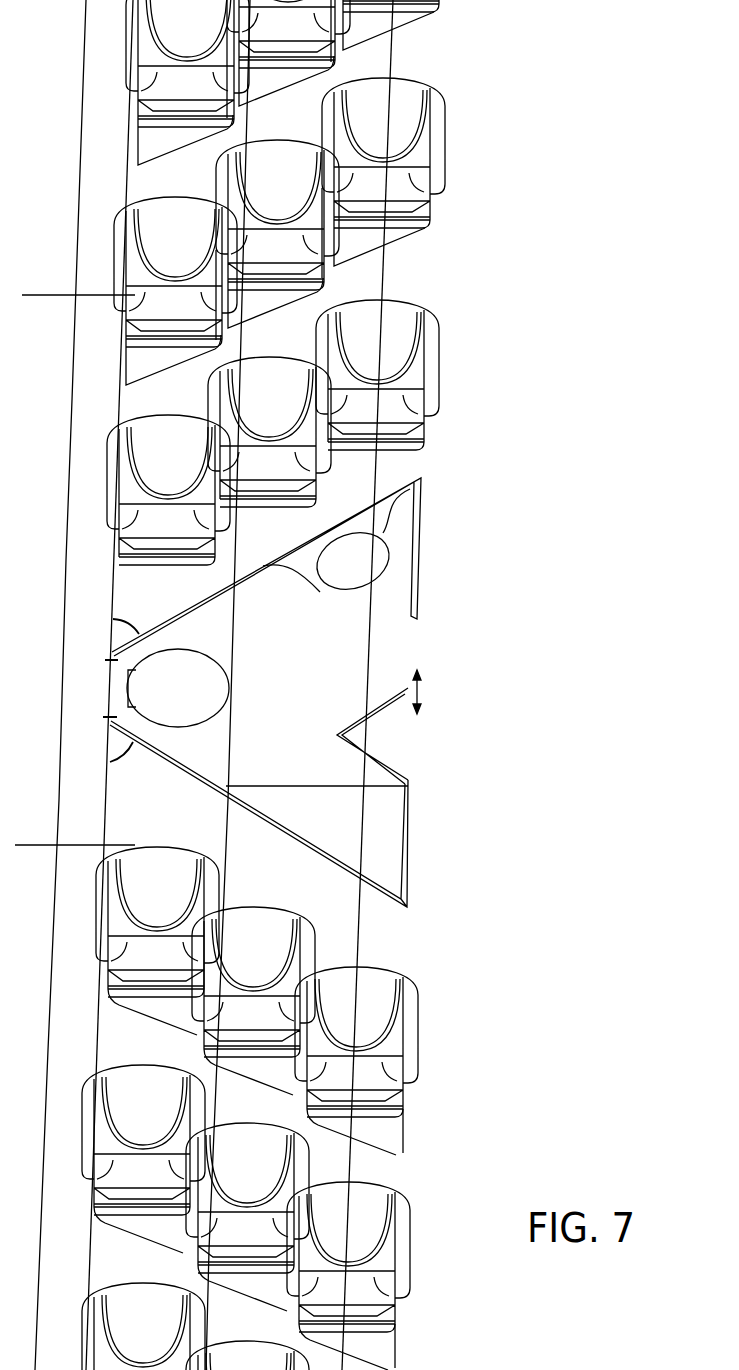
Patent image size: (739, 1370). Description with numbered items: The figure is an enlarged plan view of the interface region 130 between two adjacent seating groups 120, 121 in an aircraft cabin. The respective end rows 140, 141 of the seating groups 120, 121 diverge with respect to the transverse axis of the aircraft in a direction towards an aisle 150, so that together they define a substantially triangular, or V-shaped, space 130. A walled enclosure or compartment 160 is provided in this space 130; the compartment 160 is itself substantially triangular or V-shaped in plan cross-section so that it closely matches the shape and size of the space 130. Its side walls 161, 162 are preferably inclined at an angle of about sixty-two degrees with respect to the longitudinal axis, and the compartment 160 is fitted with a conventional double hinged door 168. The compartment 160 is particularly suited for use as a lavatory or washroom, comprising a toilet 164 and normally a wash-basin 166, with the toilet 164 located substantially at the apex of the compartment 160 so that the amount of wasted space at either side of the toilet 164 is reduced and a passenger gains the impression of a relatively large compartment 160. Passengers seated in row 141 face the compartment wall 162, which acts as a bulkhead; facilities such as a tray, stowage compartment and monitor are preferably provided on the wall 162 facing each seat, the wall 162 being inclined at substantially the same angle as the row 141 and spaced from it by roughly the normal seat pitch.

The seating group 120 is at (377, 282).
The seating group 121 is at (341, 1108).
The interface region 130 is at (380, 682).
The end row 140 is at (438, 350).
The end row 141 is at (417, 998).
The aisle 150 is at (549, 734).
The walled compartment 160 is at (324, 682).
The side wall 161 is at (354, 512).
The side wall 162 is at (280, 824).
The toilet 164 is at (229, 686).
The wash-basin 166 is at (335, 591).
The double hinged door 168 is at (354, 702).